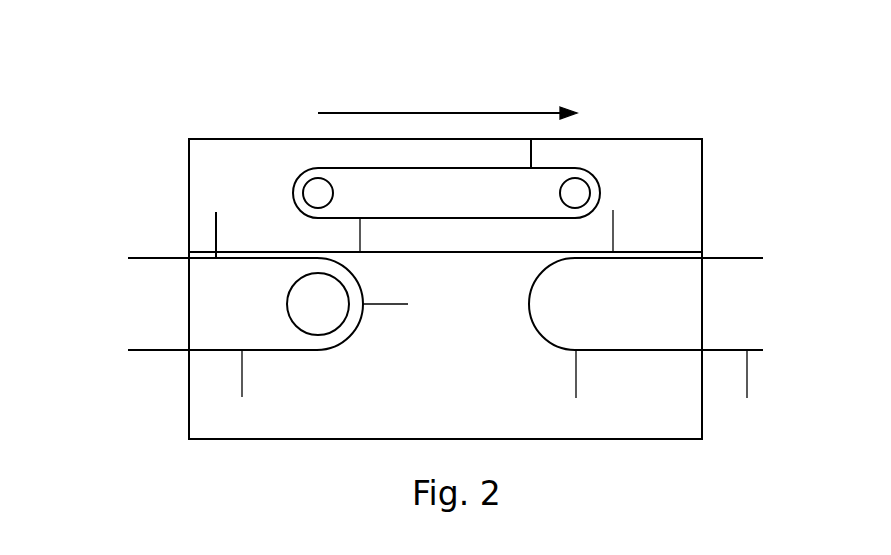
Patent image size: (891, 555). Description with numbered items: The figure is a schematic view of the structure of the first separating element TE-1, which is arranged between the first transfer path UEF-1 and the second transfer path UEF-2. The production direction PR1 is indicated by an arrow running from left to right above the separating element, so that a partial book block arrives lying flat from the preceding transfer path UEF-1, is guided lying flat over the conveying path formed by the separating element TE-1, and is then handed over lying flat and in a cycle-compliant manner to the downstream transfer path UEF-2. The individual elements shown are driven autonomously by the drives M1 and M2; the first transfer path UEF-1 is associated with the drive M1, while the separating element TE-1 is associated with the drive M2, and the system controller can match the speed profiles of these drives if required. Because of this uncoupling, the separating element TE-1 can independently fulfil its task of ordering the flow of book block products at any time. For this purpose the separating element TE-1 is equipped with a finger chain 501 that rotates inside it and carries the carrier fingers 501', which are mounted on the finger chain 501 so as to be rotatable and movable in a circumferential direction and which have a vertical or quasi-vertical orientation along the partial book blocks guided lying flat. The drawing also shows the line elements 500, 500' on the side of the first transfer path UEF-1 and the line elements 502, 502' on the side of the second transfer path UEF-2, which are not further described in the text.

The first lower transport belt (UEF-1 conveyor) 500 is at (133, 397).
The first transport element sensor/stop 500' is at (141, 221).
The finger chain 501 is at (406, 114).
The carrier fingers 501' is at (585, 89).
The second lower transport belt (UEF-2 conveyor) 502 is at (771, 220).
The second transport element sensor/stop 502' is at (812, 397).
The production direction PR1 is at (447, 97).
The first separating element TE-1 is at (533, 192).
The drive M1 is at (347, 304).
The drive M2 is at (575, 193).
The first transfer path UEF-1 is at (224, 327).
The second transfer path UEF-2 is at (664, 328).